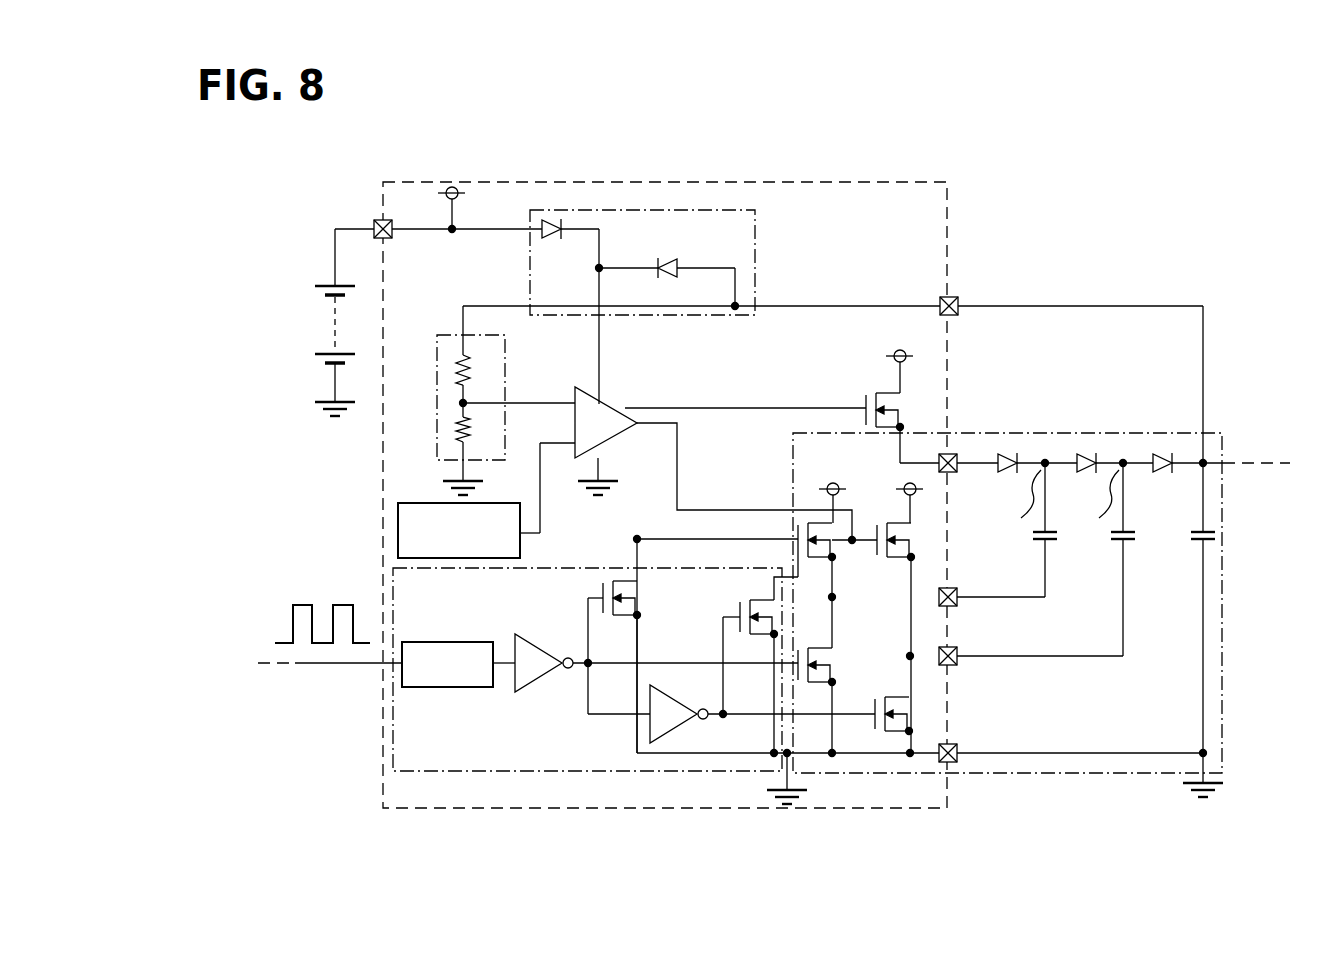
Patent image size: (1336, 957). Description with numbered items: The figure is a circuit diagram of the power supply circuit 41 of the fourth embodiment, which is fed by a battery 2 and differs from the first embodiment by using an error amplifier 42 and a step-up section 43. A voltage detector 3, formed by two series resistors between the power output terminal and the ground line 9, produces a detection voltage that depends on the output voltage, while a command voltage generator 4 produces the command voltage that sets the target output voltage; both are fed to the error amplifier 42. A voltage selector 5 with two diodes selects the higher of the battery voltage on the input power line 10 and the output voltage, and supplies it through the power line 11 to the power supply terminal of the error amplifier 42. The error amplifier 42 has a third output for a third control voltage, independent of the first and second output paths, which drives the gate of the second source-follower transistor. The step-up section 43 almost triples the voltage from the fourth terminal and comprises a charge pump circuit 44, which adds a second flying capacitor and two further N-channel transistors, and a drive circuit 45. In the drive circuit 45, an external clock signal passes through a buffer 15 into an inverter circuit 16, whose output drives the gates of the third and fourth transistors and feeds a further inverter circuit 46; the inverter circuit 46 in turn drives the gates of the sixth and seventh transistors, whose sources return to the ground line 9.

The power supply circuit 41 is at (692, 143).
The battery 2 is at (326, 332).
The voltage detector 3 is at (464, 386).
The command voltage generator 4 is at (410, 501).
The voltage selector 5 is at (663, 307).
The ground line 9 is at (466, 467).
The input power line 10 is at (459, 196).
The power line 11 is at (598, 336).
The buffer 15 is at (449, 689).
The inverter circuit 16 is at (544, 682).
The error amplifier 42 is at (600, 392).
The step-up section 43 is at (876, 824).
The charge pump circuit 44 is at (1112, 434).
The drive circuit 45 is at (575, 567).
The inverter circuit 46 is at (684, 717).